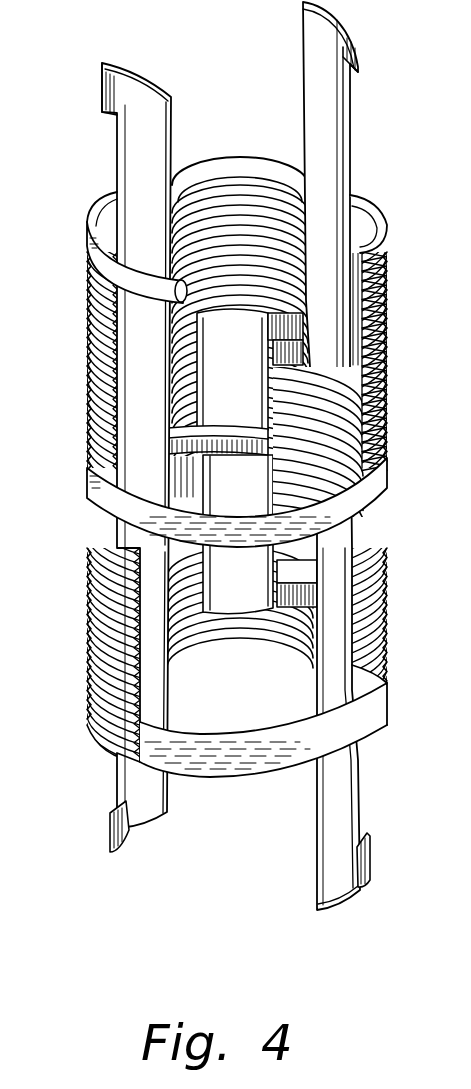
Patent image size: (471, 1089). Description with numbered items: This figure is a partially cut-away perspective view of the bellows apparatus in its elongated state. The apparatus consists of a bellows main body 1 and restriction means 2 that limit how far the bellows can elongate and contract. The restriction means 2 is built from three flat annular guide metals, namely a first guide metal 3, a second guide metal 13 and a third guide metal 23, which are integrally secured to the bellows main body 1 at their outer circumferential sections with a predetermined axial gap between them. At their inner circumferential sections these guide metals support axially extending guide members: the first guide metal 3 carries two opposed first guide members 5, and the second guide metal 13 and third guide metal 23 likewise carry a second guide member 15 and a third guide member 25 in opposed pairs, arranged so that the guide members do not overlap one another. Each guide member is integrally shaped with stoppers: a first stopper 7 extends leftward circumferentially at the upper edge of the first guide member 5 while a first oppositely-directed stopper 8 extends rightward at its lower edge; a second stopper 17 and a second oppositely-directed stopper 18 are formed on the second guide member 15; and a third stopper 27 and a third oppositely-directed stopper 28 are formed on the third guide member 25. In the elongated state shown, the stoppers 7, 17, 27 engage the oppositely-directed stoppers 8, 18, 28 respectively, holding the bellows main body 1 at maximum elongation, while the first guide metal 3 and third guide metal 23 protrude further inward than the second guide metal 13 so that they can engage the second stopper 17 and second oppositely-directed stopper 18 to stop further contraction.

The bellows main body 1 is at (392, 388).
The restriction means 2 is at (239, 456).
The first guide metal 3 is at (226, 729).
The first guide member 5 is at (231, 456).
The first stopper 7 is at (308, 581).
The first oppositely-directed stopper 8 is at (263, 848).
The second guide metal 13 is at (209, 502).
The second guide member 15 is at (244, 402).
The second stopper 17 is at (243, 372).
The second oppositely-directed stopper 18 is at (289, 618).
The third guide metal 23 is at (212, 248).
The third guide member 25 is at (338, 279).
The third stopper 27 is at (242, 92).
The third oppositely-directed stopper 28 is at (239, 421).